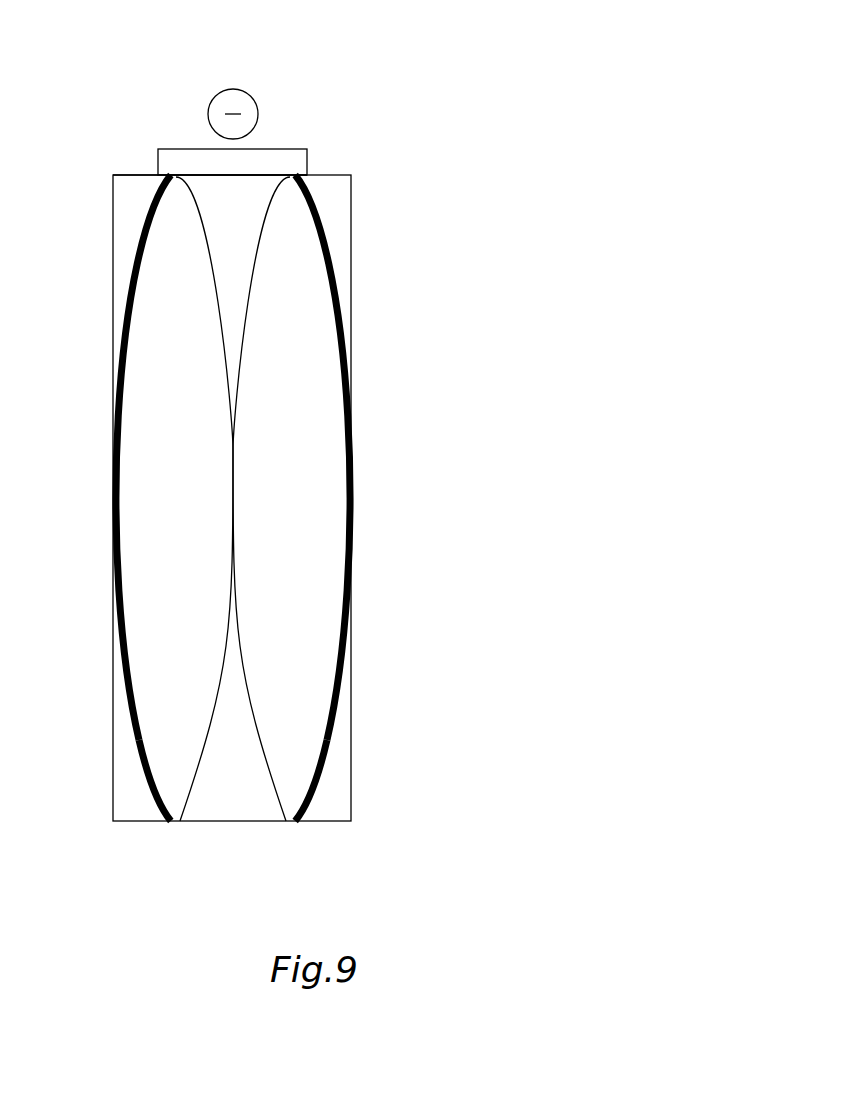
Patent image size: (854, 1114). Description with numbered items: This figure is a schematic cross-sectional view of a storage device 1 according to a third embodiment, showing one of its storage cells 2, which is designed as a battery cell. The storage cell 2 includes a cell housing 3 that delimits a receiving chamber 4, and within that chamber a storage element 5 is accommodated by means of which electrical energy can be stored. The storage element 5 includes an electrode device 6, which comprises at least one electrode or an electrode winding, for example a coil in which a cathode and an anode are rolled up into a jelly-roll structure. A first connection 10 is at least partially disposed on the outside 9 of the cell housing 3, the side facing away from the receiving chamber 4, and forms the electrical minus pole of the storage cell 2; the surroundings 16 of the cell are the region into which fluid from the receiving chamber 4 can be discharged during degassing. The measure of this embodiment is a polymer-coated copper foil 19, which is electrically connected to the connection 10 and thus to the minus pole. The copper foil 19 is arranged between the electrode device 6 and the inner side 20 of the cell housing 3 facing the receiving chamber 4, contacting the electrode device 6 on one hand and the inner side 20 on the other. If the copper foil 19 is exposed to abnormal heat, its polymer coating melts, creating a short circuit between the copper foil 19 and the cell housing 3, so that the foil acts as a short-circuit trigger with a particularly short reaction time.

The storage device 1 is at (451, 92).
The storage cell 2 is at (361, 166).
The cell housing 3 is at (352, 353).
The receiving chamber 4 is at (226, 209).
The storage element 5 is at (178, 798).
The electrode device 6 is at (328, 517).
The outside of the cell housing 9 is at (122, 172).
The first connection 10 is at (296, 158).
The surroundings 16 is at (134, 85).
The polymer-coated copper foil 19 is at (338, 288).
The inner side of the cell housing 20 is at (348, 708).